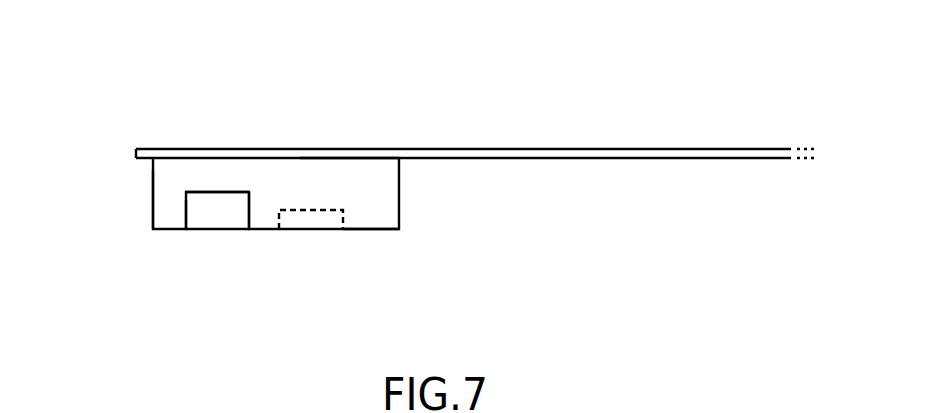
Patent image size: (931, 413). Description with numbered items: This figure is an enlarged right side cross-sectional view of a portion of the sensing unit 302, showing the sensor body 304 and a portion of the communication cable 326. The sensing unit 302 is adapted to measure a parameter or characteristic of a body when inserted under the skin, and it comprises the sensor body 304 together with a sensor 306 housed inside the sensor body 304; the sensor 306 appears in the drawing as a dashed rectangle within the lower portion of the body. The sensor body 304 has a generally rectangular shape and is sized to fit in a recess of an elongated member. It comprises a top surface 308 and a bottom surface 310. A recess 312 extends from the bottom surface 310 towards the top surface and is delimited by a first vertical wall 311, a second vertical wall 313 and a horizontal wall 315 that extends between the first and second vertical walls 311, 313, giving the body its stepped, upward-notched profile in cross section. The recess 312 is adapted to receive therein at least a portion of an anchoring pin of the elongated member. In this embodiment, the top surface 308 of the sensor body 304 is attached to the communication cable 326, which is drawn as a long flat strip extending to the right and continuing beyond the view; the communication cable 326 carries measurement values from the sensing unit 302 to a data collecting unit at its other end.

The sensing unit 302 is at (142, 276).
The sensor body 304 is at (150, 211).
The sensor 306 is at (313, 233).
The top surface 308 is at (375, 164).
The bottom surface 310 is at (387, 233).
The first vertical wall 311 is at (183, 201).
The recess 312 is at (216, 233).
The second vertical wall 313 is at (254, 203).
The horizontal wall 315 is at (221, 189).
The communication cable 326 is at (564, 146).